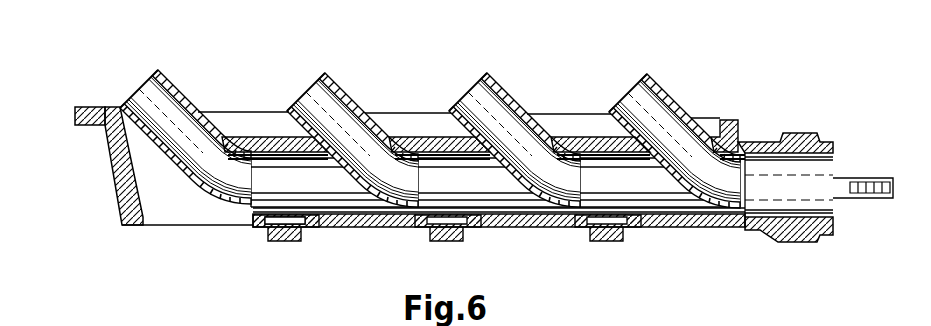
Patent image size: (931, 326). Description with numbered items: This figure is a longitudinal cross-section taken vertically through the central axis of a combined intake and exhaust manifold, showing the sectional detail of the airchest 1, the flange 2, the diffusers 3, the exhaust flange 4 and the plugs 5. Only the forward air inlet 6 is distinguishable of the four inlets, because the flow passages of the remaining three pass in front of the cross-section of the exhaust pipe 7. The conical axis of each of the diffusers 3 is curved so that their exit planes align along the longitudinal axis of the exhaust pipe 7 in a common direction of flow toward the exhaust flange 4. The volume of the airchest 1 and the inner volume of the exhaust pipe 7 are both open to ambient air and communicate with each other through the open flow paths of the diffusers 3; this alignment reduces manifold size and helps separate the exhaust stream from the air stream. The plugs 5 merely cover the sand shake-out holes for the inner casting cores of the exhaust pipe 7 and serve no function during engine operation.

The airchest 1 is at (122, 200).
The flange 2 is at (78, 112).
The diffusers 3 is at (193, 100).
The exhaust flange 4 is at (793, 128).
The plugs 5 is at (287, 240).
The forward air inlet 6 is at (190, 213).
The exhaust pipe 7 is at (630, 183).